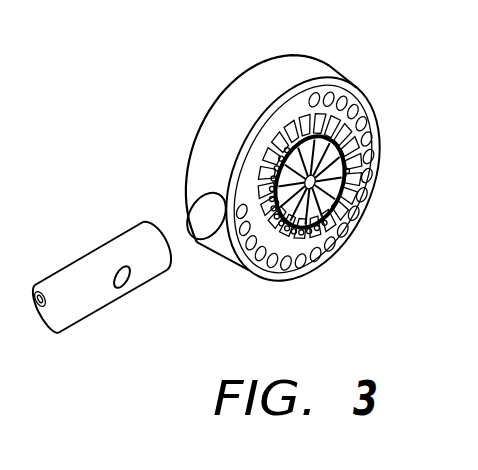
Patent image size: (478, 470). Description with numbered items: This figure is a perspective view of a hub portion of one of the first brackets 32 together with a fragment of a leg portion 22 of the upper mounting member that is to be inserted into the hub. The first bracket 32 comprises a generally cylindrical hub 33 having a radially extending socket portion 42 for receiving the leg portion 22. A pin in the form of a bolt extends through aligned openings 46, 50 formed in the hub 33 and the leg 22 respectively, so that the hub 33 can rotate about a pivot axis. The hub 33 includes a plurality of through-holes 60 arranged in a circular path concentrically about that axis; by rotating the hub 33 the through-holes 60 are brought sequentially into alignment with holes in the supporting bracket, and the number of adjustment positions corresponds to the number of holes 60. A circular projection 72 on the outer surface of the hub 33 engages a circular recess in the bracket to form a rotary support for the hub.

The leg portion 22 is at (127, 237).
The first bracket 32 is at (240, 58).
The hub 33 is at (383, 30).
The socket portion 42 is at (214, 229).
The opening 46 is at (313, 186).
The opening 50 is at (125, 293).
The through-holes 60 is at (372, 110).
The circular projection 72 is at (350, 169).